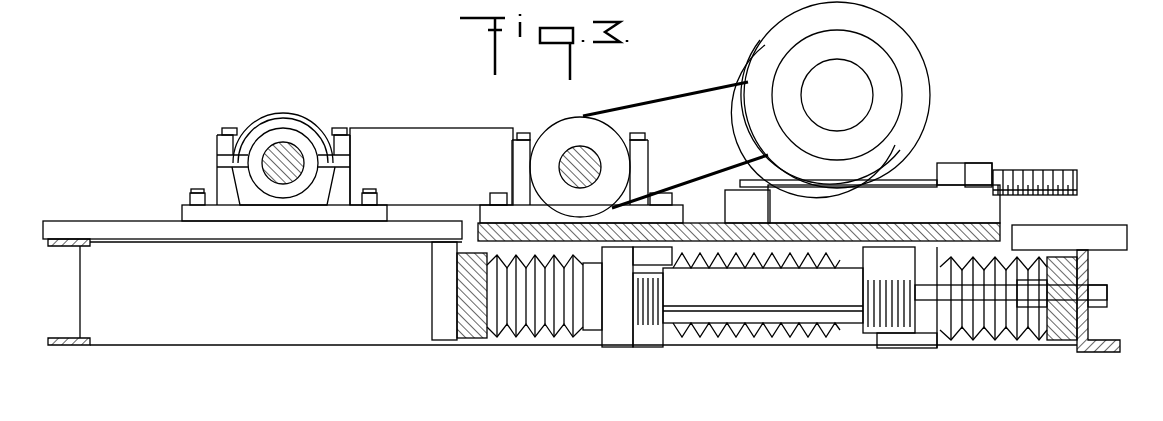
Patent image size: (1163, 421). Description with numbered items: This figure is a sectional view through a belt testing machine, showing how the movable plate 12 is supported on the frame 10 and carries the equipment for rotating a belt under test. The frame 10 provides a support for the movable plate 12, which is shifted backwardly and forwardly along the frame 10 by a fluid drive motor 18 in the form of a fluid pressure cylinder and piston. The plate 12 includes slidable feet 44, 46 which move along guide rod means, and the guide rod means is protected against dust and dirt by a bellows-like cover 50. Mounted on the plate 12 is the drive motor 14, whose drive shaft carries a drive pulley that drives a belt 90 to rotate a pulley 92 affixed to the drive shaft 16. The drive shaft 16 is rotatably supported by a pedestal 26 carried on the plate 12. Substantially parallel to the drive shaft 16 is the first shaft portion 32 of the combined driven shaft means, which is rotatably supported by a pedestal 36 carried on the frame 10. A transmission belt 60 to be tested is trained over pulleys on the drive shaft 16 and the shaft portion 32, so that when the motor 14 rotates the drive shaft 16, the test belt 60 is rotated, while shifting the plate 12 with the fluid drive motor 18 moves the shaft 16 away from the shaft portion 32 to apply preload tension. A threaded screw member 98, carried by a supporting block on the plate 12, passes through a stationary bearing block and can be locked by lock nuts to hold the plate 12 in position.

The frame 10 is at (1110, 348).
The movable plate 12 is at (697, 225).
The drive motor 14 is at (927, 93).
The drive shaft 16 is at (560, 170).
The fluid drive motor 18 is at (757, 330).
The pedestal 26 is at (514, 147).
The first shaft portion 32 is at (290, 152).
The pedestal 36 is at (268, 118).
The slidable foot 44 is at (625, 345).
The slidable foot 46 is at (895, 345).
The bellows-like cover 50 is at (530, 330).
The transmission belt 60 is at (415, 128).
The belt 90 is at (697, 92).
The pulley 92 is at (556, 128).
The threaded screw member 98 is at (1035, 175).